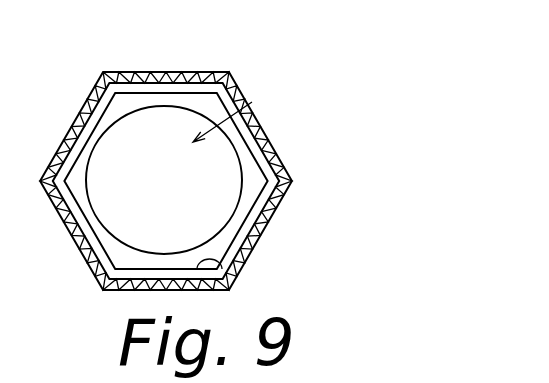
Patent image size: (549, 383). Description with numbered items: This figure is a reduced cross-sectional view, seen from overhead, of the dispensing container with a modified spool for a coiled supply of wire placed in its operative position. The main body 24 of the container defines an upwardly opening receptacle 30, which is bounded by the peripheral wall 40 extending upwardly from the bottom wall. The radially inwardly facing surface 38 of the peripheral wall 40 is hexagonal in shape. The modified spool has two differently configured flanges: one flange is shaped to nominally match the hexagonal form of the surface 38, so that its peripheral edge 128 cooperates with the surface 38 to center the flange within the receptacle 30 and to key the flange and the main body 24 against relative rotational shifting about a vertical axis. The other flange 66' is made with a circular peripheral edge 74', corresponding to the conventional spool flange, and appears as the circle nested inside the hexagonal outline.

The main body 24 is at (280, 152).
The receptacle 30 is at (245, 267).
The peripheral wall 40 is at (262, 125).
The radially inwardly facing surface 38 is at (185, 100).
The flange 66' is at (239, 182).
The circular peripheral edge 74' is at (143, 300).
The peripheral edge 128 is at (82, 240).